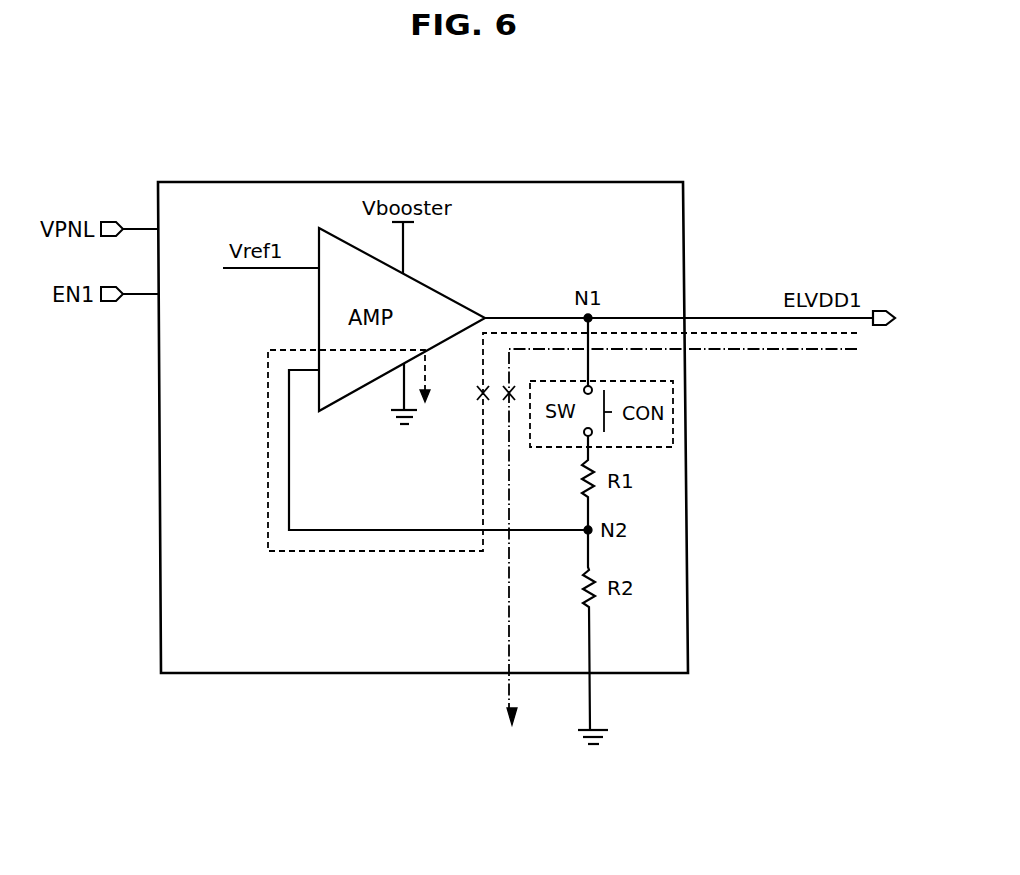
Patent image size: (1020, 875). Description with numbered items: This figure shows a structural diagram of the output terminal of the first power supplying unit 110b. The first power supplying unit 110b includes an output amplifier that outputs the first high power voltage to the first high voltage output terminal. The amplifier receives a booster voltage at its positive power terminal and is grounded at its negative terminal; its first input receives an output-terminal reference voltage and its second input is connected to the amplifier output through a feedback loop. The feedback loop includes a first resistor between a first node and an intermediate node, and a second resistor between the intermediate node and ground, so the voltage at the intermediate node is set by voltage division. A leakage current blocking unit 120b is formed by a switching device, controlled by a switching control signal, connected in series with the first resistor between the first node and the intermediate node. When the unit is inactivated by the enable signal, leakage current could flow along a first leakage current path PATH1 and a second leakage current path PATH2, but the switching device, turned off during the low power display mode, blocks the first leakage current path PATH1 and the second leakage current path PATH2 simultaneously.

The first power supplying unit 110b is at (462, 182).
The leakage current blocking unit 120b is at (673, 437).
The first leakage current path PATH1 is at (746, 333).
The second leakage current path PATH2 is at (793, 349).